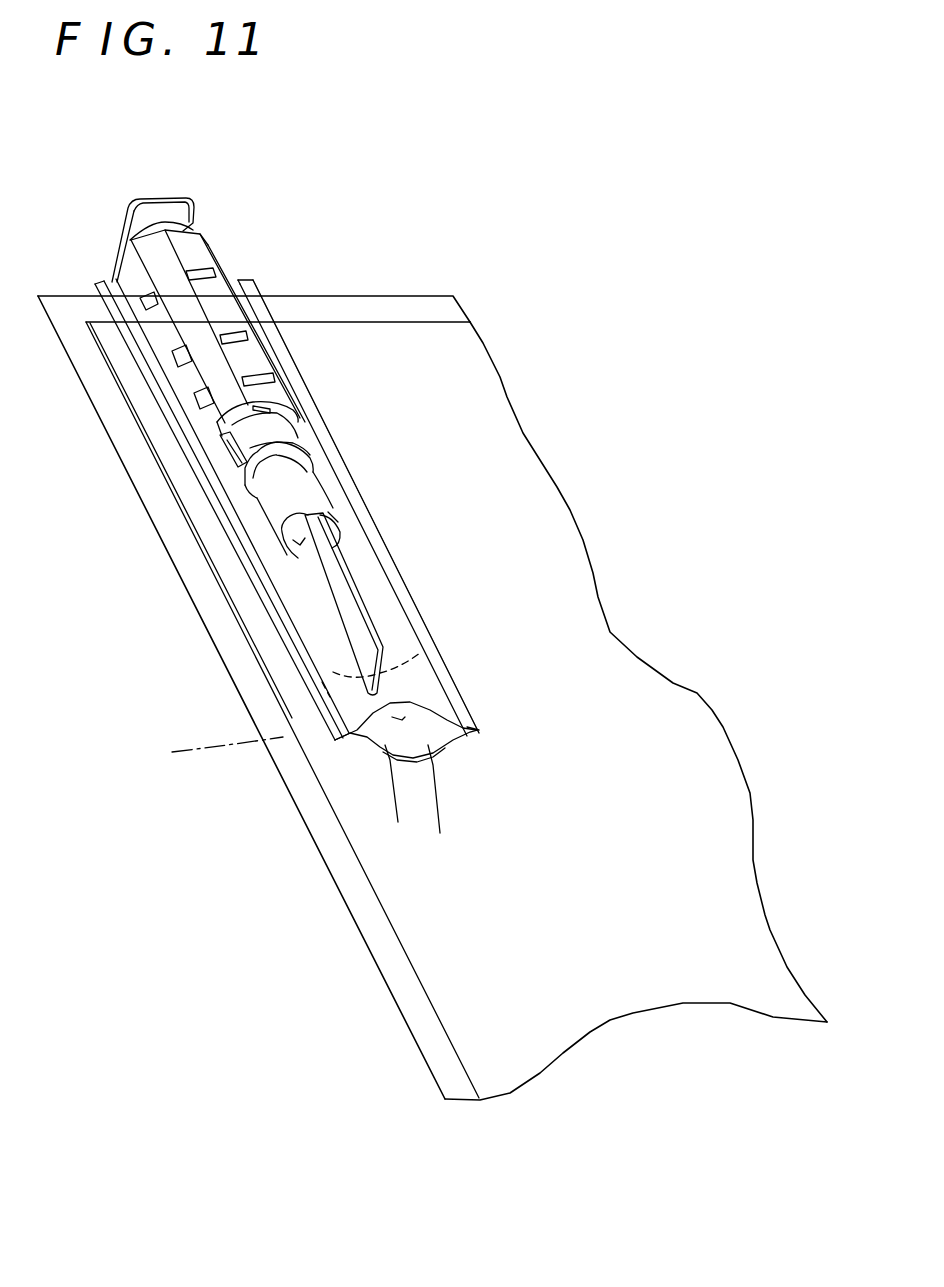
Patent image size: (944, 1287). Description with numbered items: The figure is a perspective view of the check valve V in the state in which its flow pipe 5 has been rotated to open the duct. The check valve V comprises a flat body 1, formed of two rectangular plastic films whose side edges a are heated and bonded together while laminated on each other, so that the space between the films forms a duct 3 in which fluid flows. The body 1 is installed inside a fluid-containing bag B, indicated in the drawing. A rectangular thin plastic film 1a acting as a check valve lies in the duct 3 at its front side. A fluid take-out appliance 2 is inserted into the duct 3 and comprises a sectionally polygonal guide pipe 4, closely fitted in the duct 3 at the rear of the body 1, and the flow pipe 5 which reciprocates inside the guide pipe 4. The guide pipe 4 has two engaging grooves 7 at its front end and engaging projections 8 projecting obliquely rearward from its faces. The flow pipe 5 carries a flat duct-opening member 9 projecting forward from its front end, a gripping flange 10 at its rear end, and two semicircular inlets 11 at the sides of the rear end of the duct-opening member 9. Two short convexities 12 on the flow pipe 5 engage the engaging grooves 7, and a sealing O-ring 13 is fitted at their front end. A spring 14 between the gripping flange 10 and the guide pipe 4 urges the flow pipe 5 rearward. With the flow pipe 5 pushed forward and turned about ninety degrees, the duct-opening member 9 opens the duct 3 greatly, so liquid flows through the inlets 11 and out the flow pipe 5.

The flat body 1 is at (150, 392).
The rectangular thin plastic film 1a is at (377, 726).
The fluid take-out appliance 2 is at (266, 345).
The duct 3 is at (402, 720).
The guide pipe 4 is at (130, 262).
The flow pipe 5 is at (313, 495).
The engaging grooves 7 is at (300, 412).
The engaging projections 8 is at (228, 335).
The duct-opening member 9 is at (342, 612).
The gripping flange 10 is at (150, 200).
The semicircular inlets 11 is at (347, 533).
The convexities 12 is at (248, 457).
The sealing O-ring 13 is at (312, 462).
The spring 14 is at (187, 203).
The side edges a is at (413, 603).
The fluid-containing bag B is at (211, 746).
The check valve V is at (207, 503).